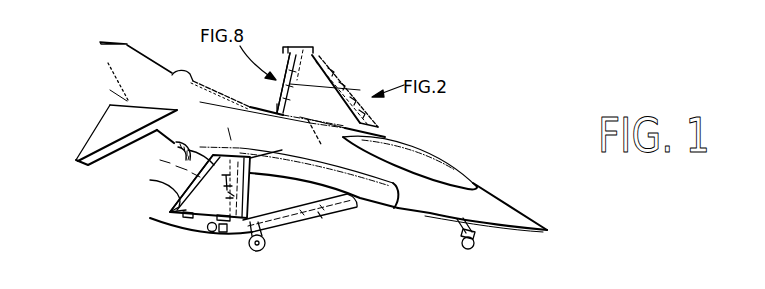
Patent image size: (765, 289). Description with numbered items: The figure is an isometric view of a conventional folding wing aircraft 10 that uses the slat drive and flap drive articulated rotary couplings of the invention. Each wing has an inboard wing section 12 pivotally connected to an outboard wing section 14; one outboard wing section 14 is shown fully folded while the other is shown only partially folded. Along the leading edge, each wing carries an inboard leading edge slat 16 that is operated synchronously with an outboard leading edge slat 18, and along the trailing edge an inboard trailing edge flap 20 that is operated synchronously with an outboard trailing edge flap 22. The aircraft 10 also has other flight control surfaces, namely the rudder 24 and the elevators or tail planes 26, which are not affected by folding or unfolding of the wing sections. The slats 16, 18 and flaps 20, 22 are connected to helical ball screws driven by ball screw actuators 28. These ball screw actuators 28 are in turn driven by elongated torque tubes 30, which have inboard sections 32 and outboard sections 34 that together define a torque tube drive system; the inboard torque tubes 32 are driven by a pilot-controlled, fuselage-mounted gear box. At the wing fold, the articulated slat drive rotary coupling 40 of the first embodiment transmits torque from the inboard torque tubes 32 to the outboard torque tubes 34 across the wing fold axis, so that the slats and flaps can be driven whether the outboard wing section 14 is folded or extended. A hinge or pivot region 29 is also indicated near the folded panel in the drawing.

The folding wing aircraft 10 is at (297, 145).
The inboard wing section 12 is at (331, 118).
The outboard wing section 14 is at (241, 150).
The inboard leading edge slat 16 is at (347, 211).
The outboard leading edge slat 18 is at (335, 70).
The inboard trailing edge flap 20 is at (277, 104).
The outboard trailing edge flap 22 is at (288, 47).
The rudder 24 is at (107, 80).
The elevators or tail planes 26 is at (183, 72).
The ball screw actuator 28 is at (171, 163).
The pivot 29 is at (305, 133).
The elongated torque tube 30 is at (321, 219).
The inboard torque tube section 32 is at (303, 49).
The outboard torque tube section 34 is at (192, 244).
The articulated slat drive rotary coupling 40 is at (213, 233).